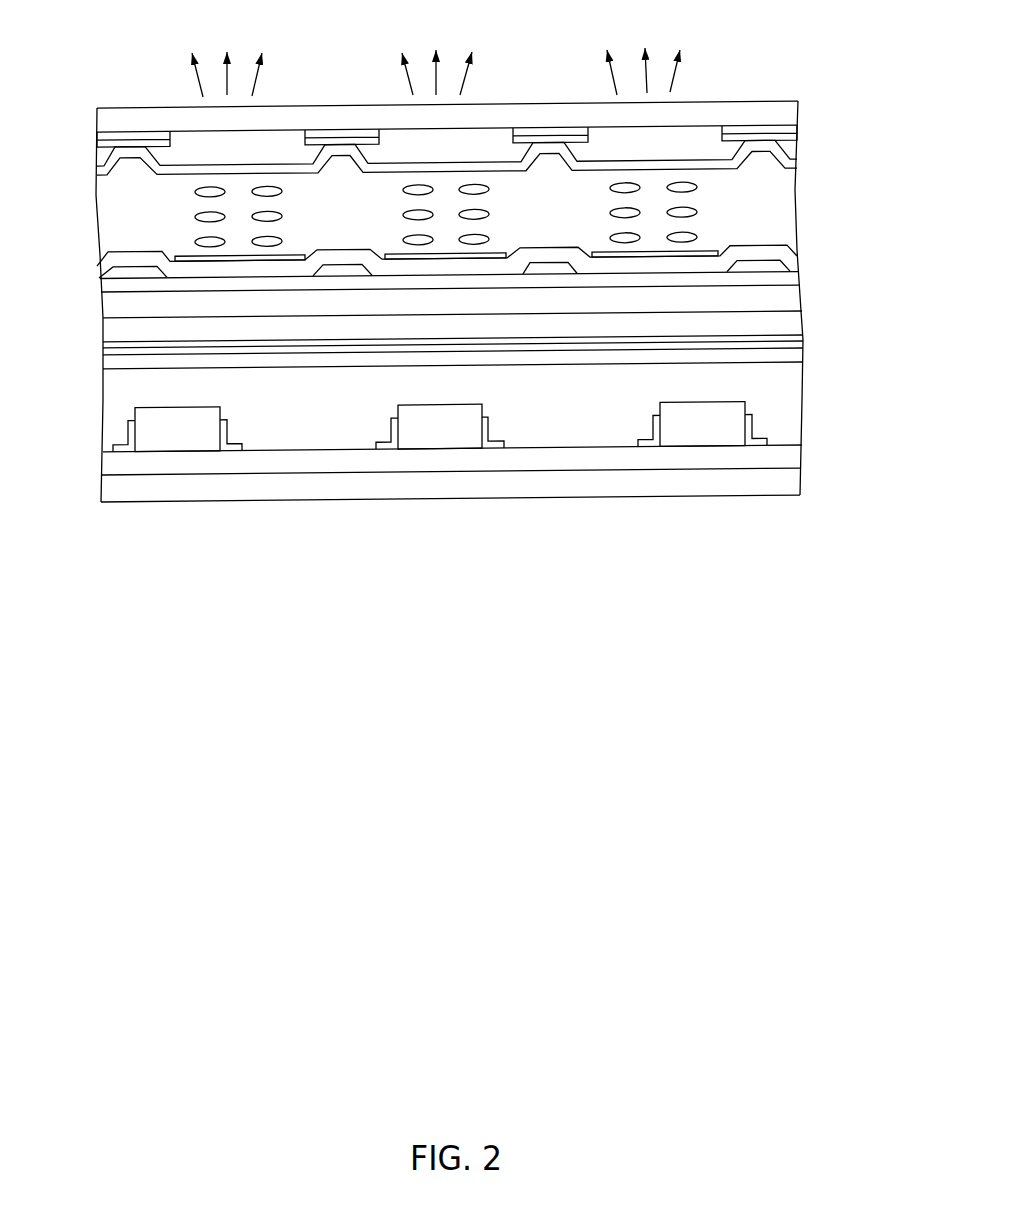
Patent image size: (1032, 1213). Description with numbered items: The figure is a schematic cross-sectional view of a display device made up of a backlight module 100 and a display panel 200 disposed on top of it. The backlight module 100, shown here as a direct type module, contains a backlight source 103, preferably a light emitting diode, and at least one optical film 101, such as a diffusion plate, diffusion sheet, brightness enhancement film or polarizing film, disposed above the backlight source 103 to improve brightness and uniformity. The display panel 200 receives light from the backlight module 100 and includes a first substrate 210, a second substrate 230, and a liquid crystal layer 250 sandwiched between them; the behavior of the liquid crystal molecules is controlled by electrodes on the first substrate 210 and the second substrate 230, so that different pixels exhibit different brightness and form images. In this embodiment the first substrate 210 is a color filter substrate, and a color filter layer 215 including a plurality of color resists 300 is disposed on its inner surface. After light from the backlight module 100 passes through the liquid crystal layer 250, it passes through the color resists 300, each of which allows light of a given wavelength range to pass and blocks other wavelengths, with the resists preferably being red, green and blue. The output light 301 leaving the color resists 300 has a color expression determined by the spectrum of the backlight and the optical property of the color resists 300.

The backlight module 100 is at (858, 498).
The optical film 101 is at (807, 336).
The backlight source 103 is at (700, 428).
The display panel 200 is at (84, 318).
The first substrate 210 is at (523, 118).
The color filter layer 215 is at (797, 127).
The second substrate 230 is at (116, 310).
The liquid crystal layer 250 is at (800, 257).
The color resist 300 is at (709, 136).
The output light 301 is at (200, 84).